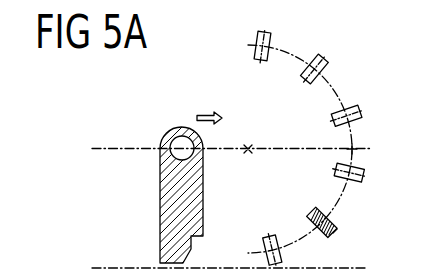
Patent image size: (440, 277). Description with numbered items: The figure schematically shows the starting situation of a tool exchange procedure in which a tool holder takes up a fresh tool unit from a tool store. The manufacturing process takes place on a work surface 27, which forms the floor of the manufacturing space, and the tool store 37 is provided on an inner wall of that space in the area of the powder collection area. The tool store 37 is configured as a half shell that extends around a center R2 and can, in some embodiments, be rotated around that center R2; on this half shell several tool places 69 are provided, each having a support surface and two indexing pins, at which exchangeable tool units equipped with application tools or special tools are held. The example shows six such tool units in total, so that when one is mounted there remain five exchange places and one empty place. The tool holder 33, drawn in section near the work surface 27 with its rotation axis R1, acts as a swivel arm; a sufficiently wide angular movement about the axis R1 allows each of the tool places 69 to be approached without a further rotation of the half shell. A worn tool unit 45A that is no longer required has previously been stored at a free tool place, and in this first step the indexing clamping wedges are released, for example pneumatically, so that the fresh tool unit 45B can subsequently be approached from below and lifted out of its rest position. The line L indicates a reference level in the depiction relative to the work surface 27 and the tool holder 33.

The tool store 37 is at (199, 80).
The reference line L is at (100, 147).
The center R2 is at (249, 146).
The rotation axis R1 is at (182, 148).
The tool holder 33 is at (133, 199).
The work surface 27 is at (100, 266).
The tool places 69 is at (302, 21).
The tool unit 45A is at (338, 250).
The tool unit 45B is at (307, 205).